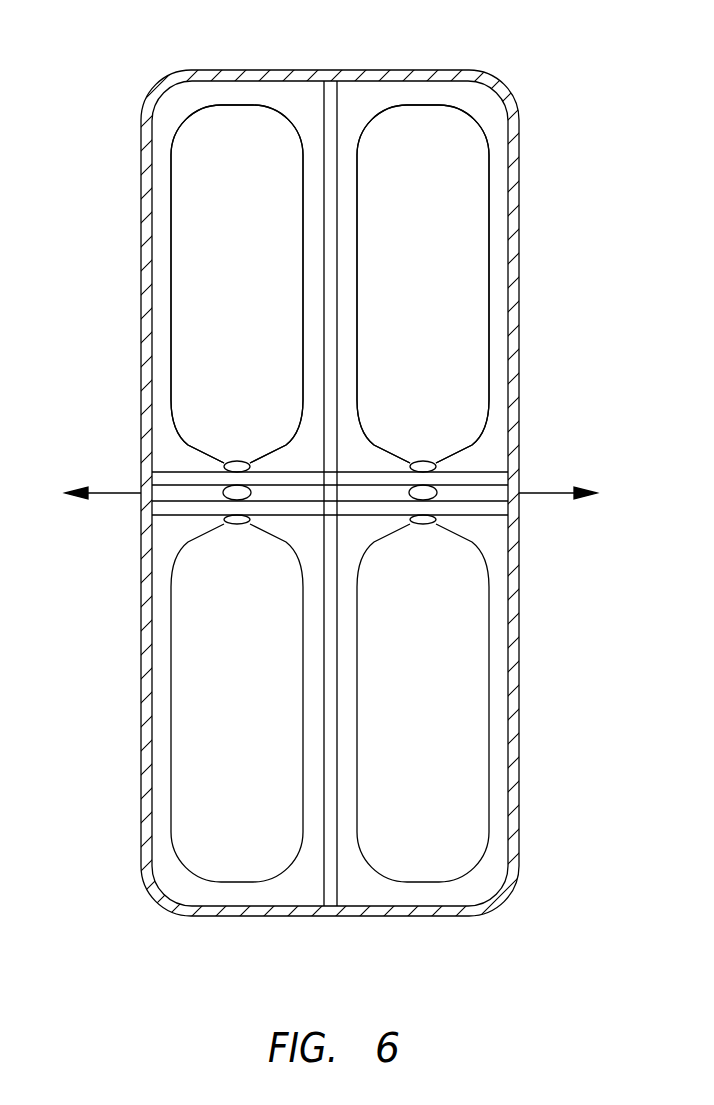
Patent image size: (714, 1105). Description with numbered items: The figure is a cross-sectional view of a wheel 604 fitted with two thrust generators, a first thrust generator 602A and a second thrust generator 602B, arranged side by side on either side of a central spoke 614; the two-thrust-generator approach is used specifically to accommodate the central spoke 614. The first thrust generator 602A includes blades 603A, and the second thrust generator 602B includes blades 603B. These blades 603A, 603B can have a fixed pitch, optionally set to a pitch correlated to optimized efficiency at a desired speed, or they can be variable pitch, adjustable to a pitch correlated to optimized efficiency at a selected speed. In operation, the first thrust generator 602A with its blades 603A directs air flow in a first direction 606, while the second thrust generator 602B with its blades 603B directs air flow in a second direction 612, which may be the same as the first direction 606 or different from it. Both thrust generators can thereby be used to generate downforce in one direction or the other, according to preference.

The wheel 604 is at (465, 70).
The central spoke 614 is at (329, 98).
The first thrust generator 602A is at (215, 218).
The second thrust generator 602B is at (445, 218).
The blades 603A is at (194, 246).
The blades 603B is at (466, 246).
The first direction 606 is at (103, 490).
The second direction 612 is at (546, 490).